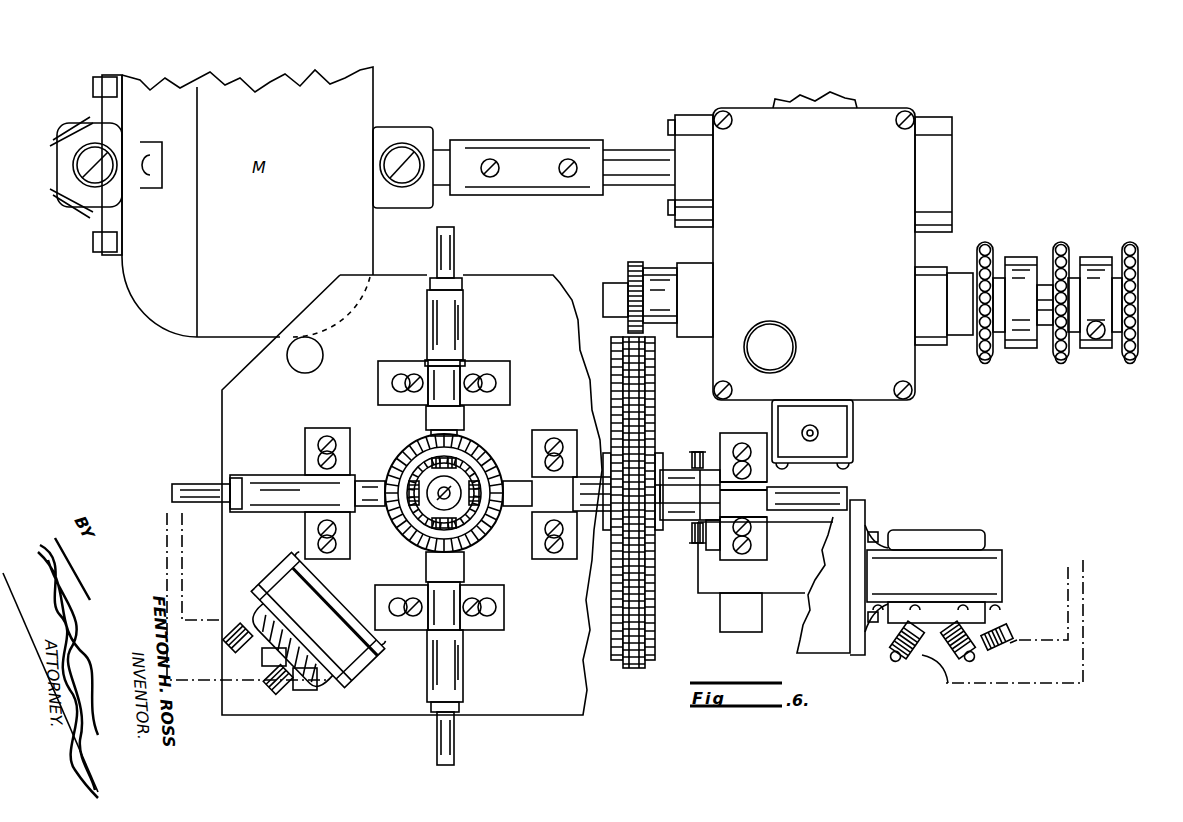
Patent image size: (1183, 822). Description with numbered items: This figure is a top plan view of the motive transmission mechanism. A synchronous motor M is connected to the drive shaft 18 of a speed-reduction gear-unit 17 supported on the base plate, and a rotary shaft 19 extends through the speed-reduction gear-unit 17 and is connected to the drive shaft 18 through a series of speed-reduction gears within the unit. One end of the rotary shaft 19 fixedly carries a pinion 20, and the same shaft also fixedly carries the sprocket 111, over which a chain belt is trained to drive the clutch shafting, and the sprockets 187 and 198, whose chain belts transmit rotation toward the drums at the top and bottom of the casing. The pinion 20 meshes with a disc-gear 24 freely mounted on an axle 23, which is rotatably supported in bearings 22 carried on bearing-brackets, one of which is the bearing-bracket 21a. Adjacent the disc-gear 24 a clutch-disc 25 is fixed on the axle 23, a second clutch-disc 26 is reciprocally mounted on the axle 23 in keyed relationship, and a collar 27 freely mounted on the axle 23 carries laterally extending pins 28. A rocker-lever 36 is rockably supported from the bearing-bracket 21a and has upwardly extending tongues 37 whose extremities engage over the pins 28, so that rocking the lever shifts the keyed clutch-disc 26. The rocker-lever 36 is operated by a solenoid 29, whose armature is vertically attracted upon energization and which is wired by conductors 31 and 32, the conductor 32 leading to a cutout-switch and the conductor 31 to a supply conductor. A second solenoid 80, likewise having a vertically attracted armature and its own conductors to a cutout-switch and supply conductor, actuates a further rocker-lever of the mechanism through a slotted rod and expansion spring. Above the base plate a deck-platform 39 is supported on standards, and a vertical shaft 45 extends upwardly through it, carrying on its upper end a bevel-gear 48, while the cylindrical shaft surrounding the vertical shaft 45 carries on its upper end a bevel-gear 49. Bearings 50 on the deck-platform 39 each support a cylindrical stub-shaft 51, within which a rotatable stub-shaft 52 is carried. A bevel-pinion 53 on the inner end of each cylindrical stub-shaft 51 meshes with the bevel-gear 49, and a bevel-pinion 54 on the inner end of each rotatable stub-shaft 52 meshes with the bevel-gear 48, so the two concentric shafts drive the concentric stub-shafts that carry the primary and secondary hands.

The speed-reduction gear-unit 17 is at (820, 280).
The drive shaft 18 is at (648, 170).
The rotary shaft 19 is at (1047, 290).
The pinion 20 is at (637, 270).
The bearing-bracket 21a is at (730, 620).
The bearings 22 is at (767, 530).
The axle 23 is at (840, 495).
The disc-gear 24 is at (633, 668).
The clutch-disc 25 is at (614, 346).
The clutch-disc 26 is at (648, 348).
The collar 27 is at (725, 555).
The pins 28 is at (695, 467).
The solenoid 29 is at (975, 540).
The conductor 31 is at (1015, 685).
The conductor 32 is at (1020, 640).
The rocker-lever 36 is at (781, 577).
The tongues 37 is at (697, 452).
The deck-platform 39 is at (352, 288).
The vertical shaft 45 is at (403, 535).
The bevel-gear 48 is at (430, 485).
The bevel-gear 49 is at (495, 448).
The bearings 50 is at (485, 362).
The cylindrical stub-shaft 51 is at (432, 322).
The rotatable stub-shaft 52 is at (437, 243).
The bevel-pinion 53 is at (420, 440).
The bevel-pinion 54 is at (460, 450).
The solenoid 80 is at (300, 636).
The sprocket 111 is at (1140, 245).
The sprocket 187 is at (987, 245).
The sprocket 198 is at (1045, 355).